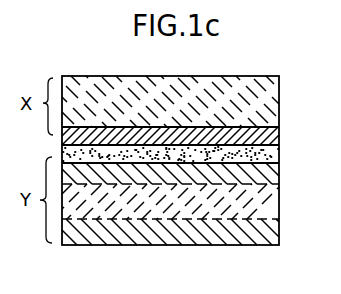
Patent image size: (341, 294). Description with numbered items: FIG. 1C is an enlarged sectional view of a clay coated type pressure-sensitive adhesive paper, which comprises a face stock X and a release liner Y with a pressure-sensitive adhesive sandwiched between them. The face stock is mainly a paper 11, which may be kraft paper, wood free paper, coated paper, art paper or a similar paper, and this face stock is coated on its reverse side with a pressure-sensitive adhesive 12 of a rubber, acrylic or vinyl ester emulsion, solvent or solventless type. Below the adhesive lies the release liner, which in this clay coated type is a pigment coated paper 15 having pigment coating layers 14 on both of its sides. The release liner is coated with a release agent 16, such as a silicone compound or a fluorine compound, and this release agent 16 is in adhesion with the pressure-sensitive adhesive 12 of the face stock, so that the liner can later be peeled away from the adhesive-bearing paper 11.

The paper 11 is at (257, 97).
The pressure-sensitive adhesive 12 is at (98, 131).
The pigment coating layers 14 is at (65, 243).
The pigment coated paper 15 is at (261, 209).
The release agent 16 is at (62, 153).